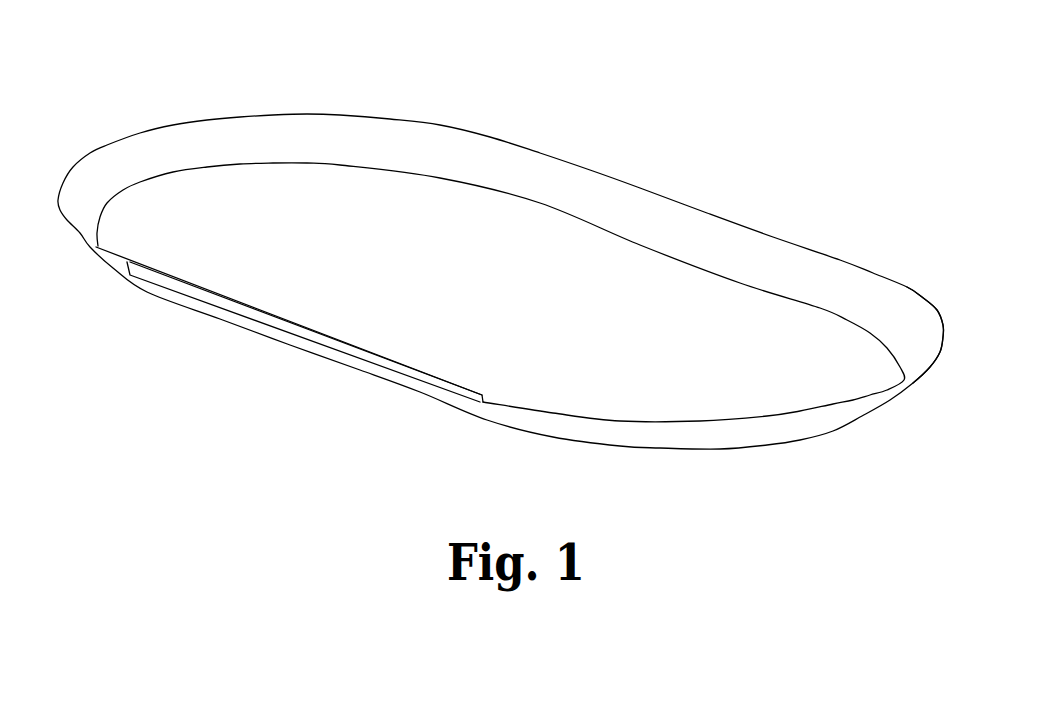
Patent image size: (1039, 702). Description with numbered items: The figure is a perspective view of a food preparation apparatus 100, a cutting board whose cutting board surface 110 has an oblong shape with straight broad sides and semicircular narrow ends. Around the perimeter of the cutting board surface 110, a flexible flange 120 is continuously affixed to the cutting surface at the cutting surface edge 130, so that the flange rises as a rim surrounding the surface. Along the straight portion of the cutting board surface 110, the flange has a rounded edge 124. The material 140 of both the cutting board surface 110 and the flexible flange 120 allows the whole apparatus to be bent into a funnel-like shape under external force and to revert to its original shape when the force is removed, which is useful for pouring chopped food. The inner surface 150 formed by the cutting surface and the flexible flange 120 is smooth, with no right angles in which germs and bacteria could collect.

The food preparation apparatus 100 is at (541, 268).
The cutting board surface 110 is at (501, 241).
The flexible flange 120 is at (807, 277).
The rounded edge 124 is at (297, 330).
The cutting surface edge 130 is at (390, 168).
The material 140 is at (828, 343).
The inner surface 150 is at (630, 363).